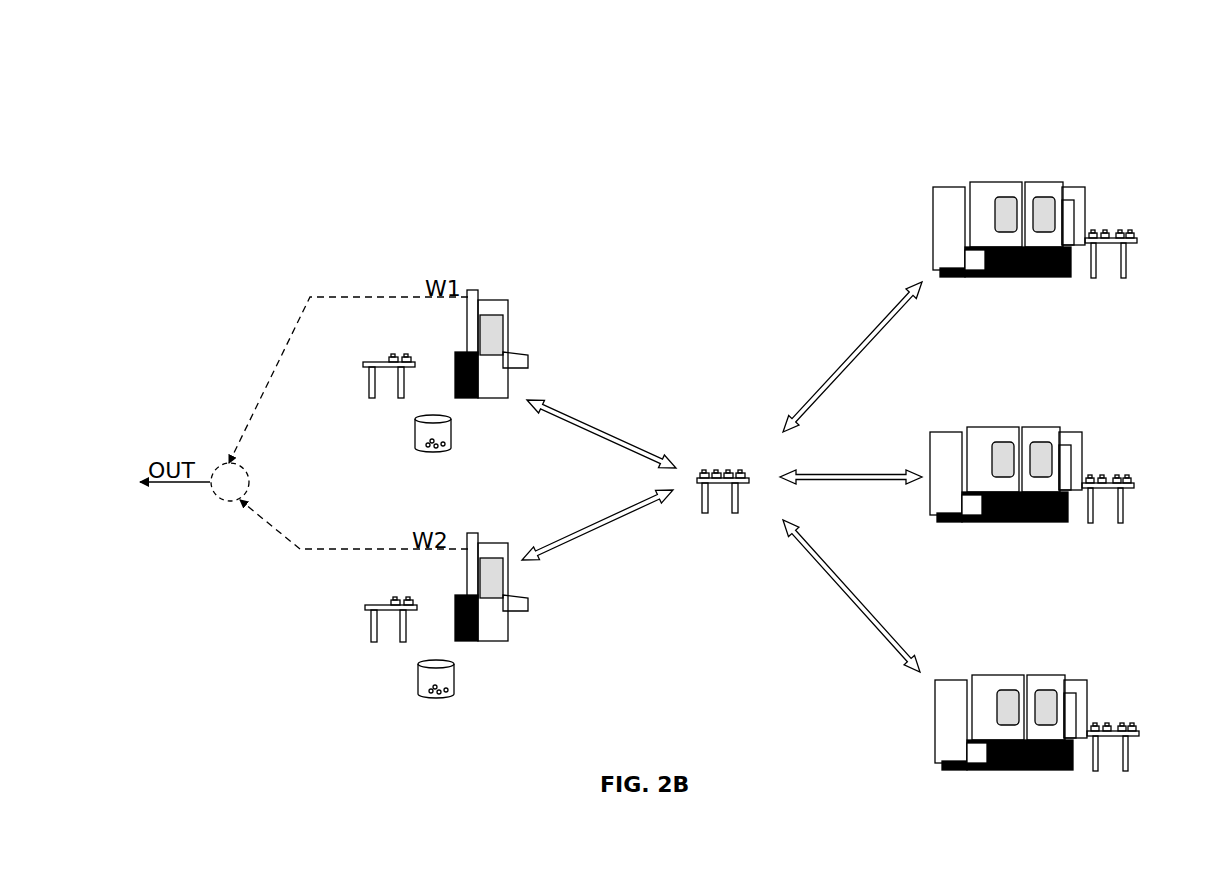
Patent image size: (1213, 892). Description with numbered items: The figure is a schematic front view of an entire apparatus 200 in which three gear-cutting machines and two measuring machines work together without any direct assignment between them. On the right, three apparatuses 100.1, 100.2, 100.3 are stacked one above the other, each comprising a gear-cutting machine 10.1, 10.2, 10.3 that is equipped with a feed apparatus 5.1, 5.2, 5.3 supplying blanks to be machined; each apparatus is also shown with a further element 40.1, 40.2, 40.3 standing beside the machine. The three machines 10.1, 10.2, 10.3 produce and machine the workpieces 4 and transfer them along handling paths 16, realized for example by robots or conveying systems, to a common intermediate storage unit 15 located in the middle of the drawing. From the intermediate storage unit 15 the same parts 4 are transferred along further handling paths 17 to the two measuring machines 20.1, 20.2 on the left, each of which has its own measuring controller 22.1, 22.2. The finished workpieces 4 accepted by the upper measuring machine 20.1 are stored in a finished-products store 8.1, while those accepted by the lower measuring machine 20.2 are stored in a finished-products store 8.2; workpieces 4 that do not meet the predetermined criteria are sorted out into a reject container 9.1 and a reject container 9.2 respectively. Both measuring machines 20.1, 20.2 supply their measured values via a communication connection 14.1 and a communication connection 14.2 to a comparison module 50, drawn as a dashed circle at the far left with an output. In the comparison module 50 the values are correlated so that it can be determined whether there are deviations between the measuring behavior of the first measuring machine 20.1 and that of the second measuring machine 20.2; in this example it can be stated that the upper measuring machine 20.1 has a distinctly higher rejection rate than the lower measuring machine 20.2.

The entire apparatus 200 is at (659, 194).
The apparatus 100.1 is at (1053, 181).
The apparatus 100.2 is at (1050, 427).
The apparatus 100.3 is at (1055, 674).
The control cabinet of first station 40.1 is at (943, 190).
The control cabinet of second station 40.2 is at (962, 459).
The control cabinet of third station 40.3 is at (967, 707).
The gear-cutting machine 10.1 is at (1077, 188).
The gear-cutting machine 10.2 is at (1046, 463).
The gear-cutting machine 10.3 is at (1051, 711).
The feed apparatus 5.1 is at (1101, 217).
The feed apparatus 5.2 is at (1126, 484).
The feed apparatus 5.3 is at (1131, 732).
The workpieces 4 is at (406, 353).
The intermediate storage unit 15 is at (695, 467).
The handling paths 16 is at (853, 348).
The handling paths 17 is at (566, 413).
The measuring machine 20.1 is at (519, 330).
The measuring machine 20.2 is at (521, 573).
The measuring controller 22.1 is at (512, 356).
The measuring controller 22.2 is at (512, 599).
The finished-products store 8.1 is at (366, 358).
The finished-products store 8.2 is at (366, 602).
The reject container 9.1 is at (455, 440).
The reject container 9.2 is at (458, 684).
The communication connection 14.1 is at (324, 297).
The communication connection 14.2 is at (272, 526).
The comparison module 50 is at (230, 482).